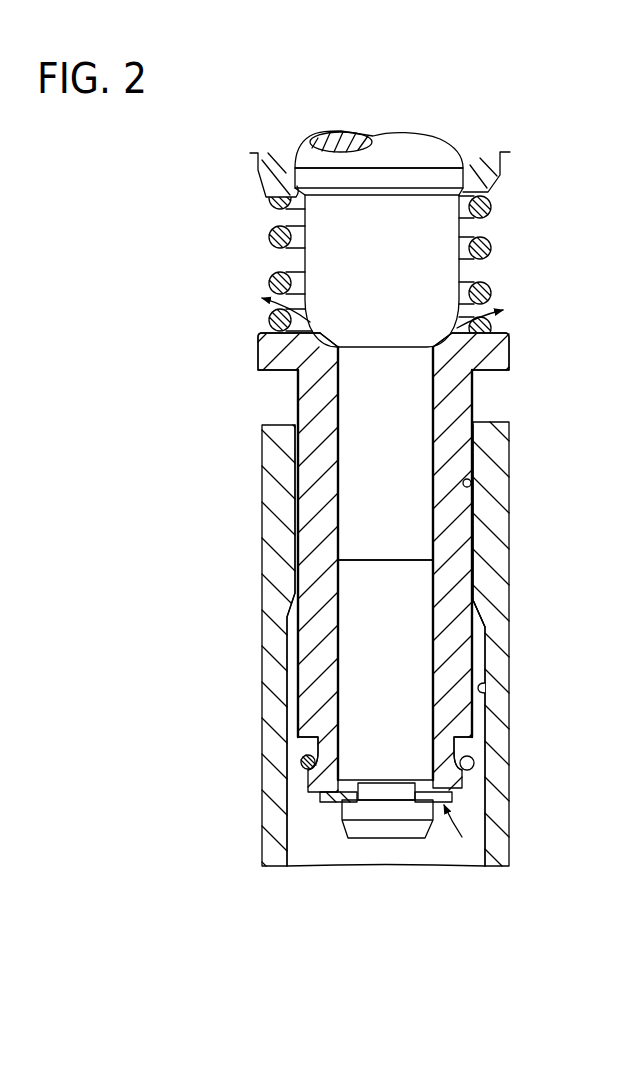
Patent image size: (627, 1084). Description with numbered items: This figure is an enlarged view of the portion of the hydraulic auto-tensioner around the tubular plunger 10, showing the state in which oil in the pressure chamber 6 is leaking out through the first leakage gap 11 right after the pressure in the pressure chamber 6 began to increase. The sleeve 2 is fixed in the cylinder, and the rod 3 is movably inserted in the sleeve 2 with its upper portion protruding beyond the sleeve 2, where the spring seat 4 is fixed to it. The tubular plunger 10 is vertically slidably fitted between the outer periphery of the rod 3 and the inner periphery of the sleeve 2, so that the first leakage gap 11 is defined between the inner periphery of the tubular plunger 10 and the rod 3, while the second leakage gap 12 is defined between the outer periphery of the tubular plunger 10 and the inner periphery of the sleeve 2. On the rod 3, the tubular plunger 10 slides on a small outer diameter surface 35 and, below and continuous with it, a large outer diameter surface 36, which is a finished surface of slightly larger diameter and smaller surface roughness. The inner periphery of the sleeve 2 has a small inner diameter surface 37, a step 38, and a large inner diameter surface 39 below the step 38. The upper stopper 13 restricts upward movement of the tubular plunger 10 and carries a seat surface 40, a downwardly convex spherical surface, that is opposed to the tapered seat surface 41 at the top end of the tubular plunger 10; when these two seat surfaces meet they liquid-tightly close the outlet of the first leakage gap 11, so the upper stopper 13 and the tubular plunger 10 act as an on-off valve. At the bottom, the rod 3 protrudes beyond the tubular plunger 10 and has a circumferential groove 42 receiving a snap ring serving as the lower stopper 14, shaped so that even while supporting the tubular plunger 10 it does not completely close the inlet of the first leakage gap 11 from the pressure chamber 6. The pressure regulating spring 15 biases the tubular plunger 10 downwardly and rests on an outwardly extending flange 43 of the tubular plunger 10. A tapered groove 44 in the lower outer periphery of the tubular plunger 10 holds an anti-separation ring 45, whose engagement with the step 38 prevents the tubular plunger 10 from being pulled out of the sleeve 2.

The sleeve 2 is at (498, 862).
The rod 3 is at (395, 150).
The spring seat 4 is at (278, 150).
The pressure chamber 6 is at (405, 855).
The tubular plunger 10 is at (305, 405).
The first leakage gap 11 is at (337, 640).
The second leakage gap 12 is at (292, 493).
The upper stopper 13 is at (317, 258).
The lower stopper 14 is at (338, 800).
The pressure regulating spring 15 is at (494, 249).
The small outer diameter surface 35 is at (420, 452).
The large outer diameter surface 36 is at (420, 578).
The small inner diameter surface 37 is at (473, 487).
The step 38 is at (473, 605).
The large inner diameter surface 39 is at (487, 688).
The seat surface 40 is at (320, 333).
The seat surface 41 is at (450, 335).
The circumferential groove 42 is at (373, 793).
The outwardly extending flange 43 is at (267, 353).
The tapered groove 44 is at (316, 742).
The anti-separation ring 45 is at (303, 765).